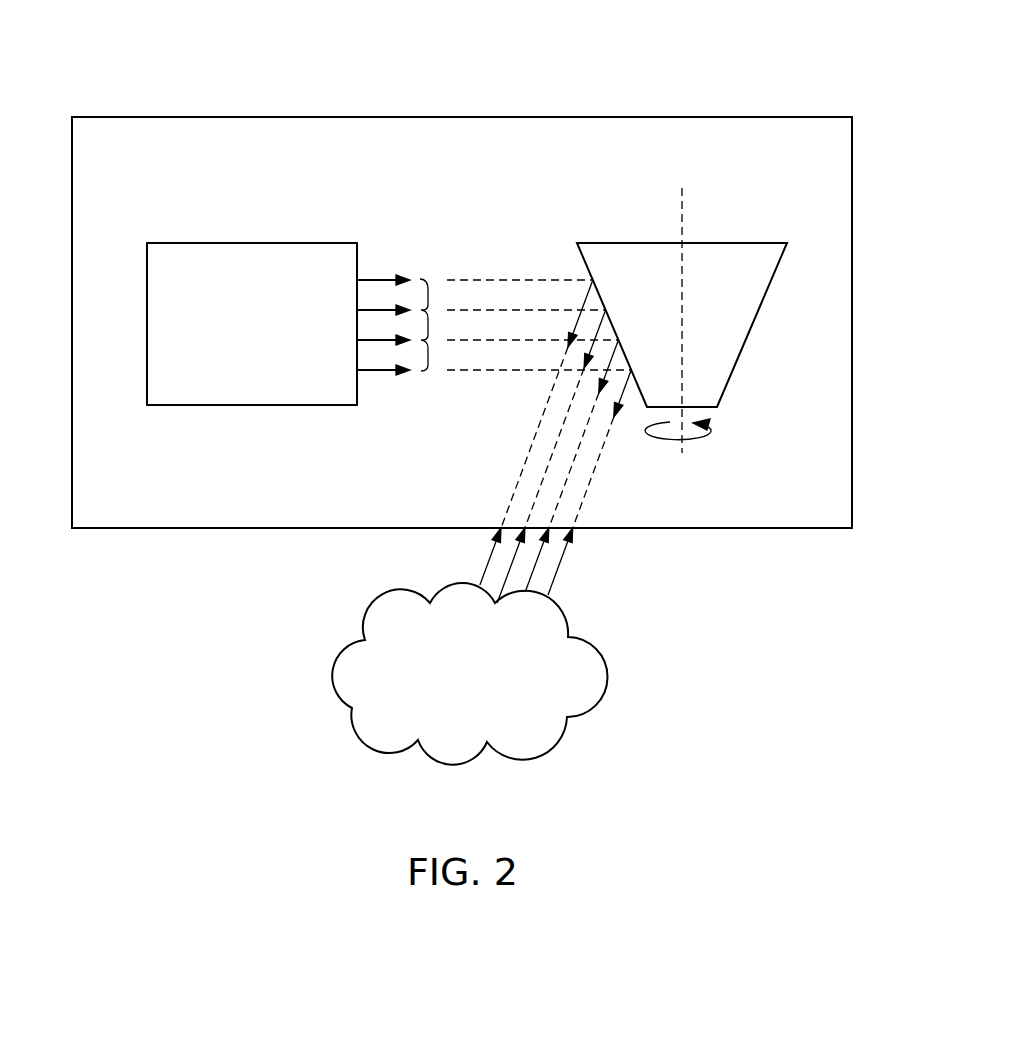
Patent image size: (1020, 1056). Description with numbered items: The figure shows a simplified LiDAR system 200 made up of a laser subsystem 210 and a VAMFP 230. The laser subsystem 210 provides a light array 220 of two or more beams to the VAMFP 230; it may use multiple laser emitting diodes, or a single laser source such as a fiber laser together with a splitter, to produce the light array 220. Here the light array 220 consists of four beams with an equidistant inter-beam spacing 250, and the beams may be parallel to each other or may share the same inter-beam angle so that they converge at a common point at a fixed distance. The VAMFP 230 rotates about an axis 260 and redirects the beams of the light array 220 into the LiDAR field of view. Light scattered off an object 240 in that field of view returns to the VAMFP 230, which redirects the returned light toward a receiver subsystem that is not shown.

The LiDAR system 200 is at (461, 117).
The laser subsystem 210 is at (251, 243).
The light array 220 is at (410, 256).
The VAMFP 230 is at (745, 243).
The object 240 is at (605, 683).
The inter-beam spacing 250 is at (428, 294).
The axis 260 is at (690, 440).